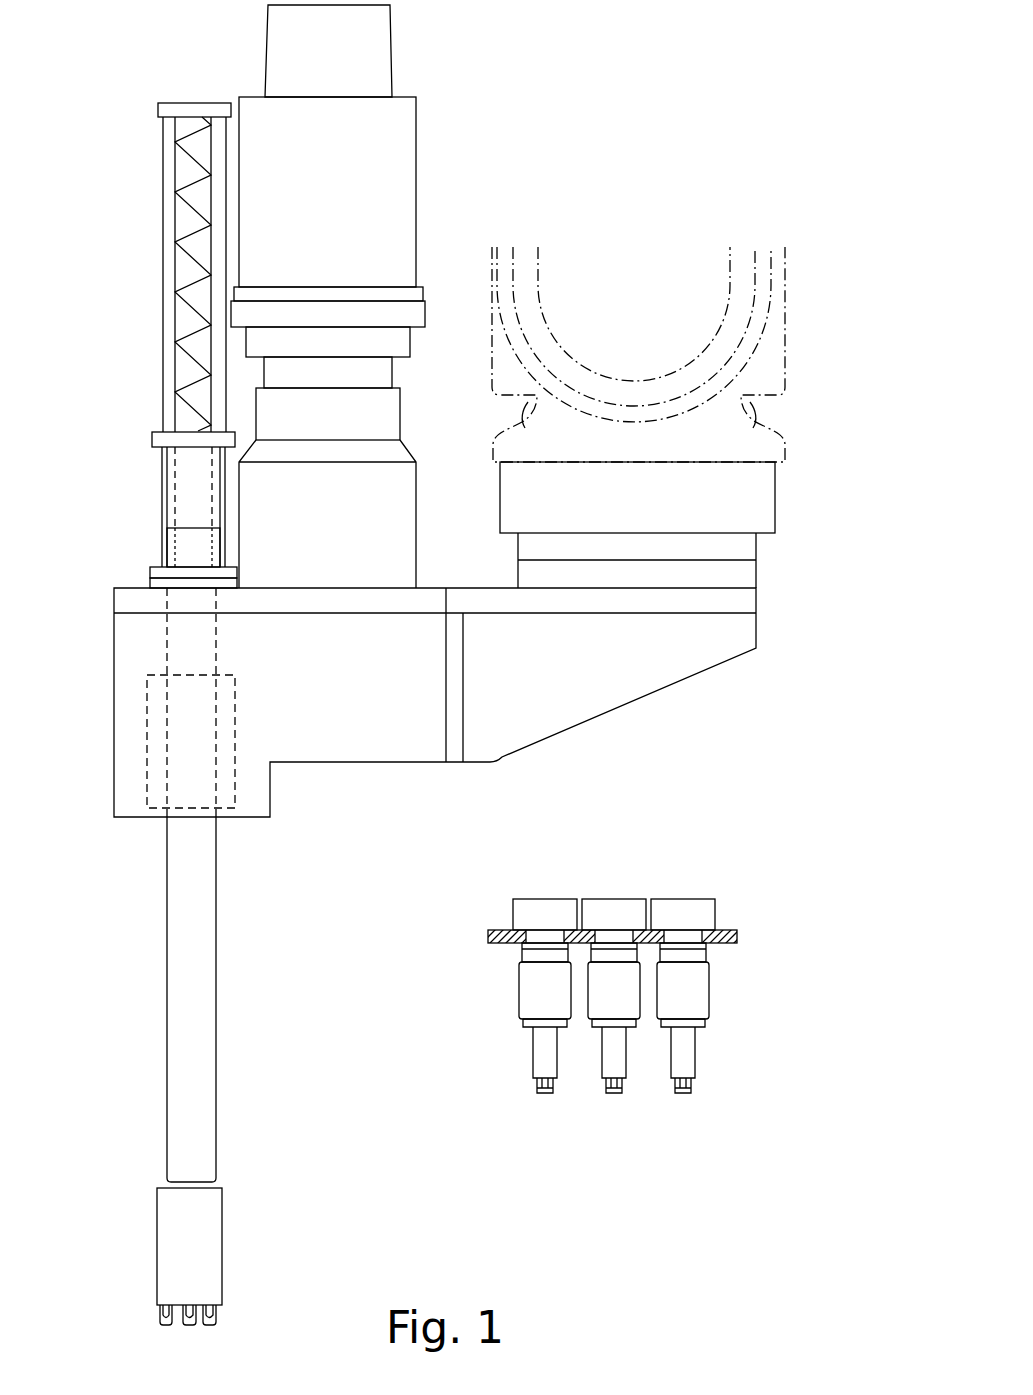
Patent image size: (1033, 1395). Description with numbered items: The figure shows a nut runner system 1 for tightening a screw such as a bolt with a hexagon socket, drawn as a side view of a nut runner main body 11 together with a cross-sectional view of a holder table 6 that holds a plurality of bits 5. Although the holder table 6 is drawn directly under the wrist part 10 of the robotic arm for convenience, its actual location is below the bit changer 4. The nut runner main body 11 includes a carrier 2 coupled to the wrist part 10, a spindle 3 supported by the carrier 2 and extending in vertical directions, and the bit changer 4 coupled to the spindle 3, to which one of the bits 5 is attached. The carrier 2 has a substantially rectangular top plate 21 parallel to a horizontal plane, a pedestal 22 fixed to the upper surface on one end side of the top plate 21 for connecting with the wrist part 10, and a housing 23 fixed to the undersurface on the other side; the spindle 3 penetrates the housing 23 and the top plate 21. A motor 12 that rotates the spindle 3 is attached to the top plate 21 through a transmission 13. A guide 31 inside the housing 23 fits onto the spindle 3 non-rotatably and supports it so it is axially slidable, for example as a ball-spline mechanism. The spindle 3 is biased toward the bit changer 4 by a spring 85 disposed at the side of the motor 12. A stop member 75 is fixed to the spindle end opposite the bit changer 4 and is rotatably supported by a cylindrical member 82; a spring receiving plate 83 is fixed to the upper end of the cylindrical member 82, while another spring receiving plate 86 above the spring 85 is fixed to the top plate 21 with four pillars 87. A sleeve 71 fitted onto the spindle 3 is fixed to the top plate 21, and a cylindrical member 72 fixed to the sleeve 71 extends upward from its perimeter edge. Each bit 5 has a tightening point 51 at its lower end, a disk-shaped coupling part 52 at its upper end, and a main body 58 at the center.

The nut runner system 1 is at (634, 172).
The carrier 2 is at (336, 767).
The spindle 3 is at (205, 1015).
The bit changer 4 is at (205, 1248).
The bit 5 is at (560, 893).
The holder table 6 is at (490, 937).
The wrist part 10 is at (633, 322).
The nut runner main body 11 is at (309, 856).
The motor 12 is at (400, 170).
The transmission 13 is at (358, 518).
The top plate 21 is at (530, 603).
The pedestal 22 is at (643, 575).
The housing 23 is at (395, 742).
The guide 31 is at (235, 762).
The tightening point 51 is at (679, 1095).
The coupling part 52 is at (677, 906).
The main body 58 is at (618, 1052).
The sleeve 71 is at (150, 583).
The cylindrical member 72 is at (150, 572).
The stop member 75 is at (185, 548).
The cylindrical member 82 is at (190, 470).
The spring receiving plate 83 is at (152, 437).
The spring 85 is at (165, 325).
The spring receiving plate 86 is at (196, 102).
The pillar 87 is at (217, 180).